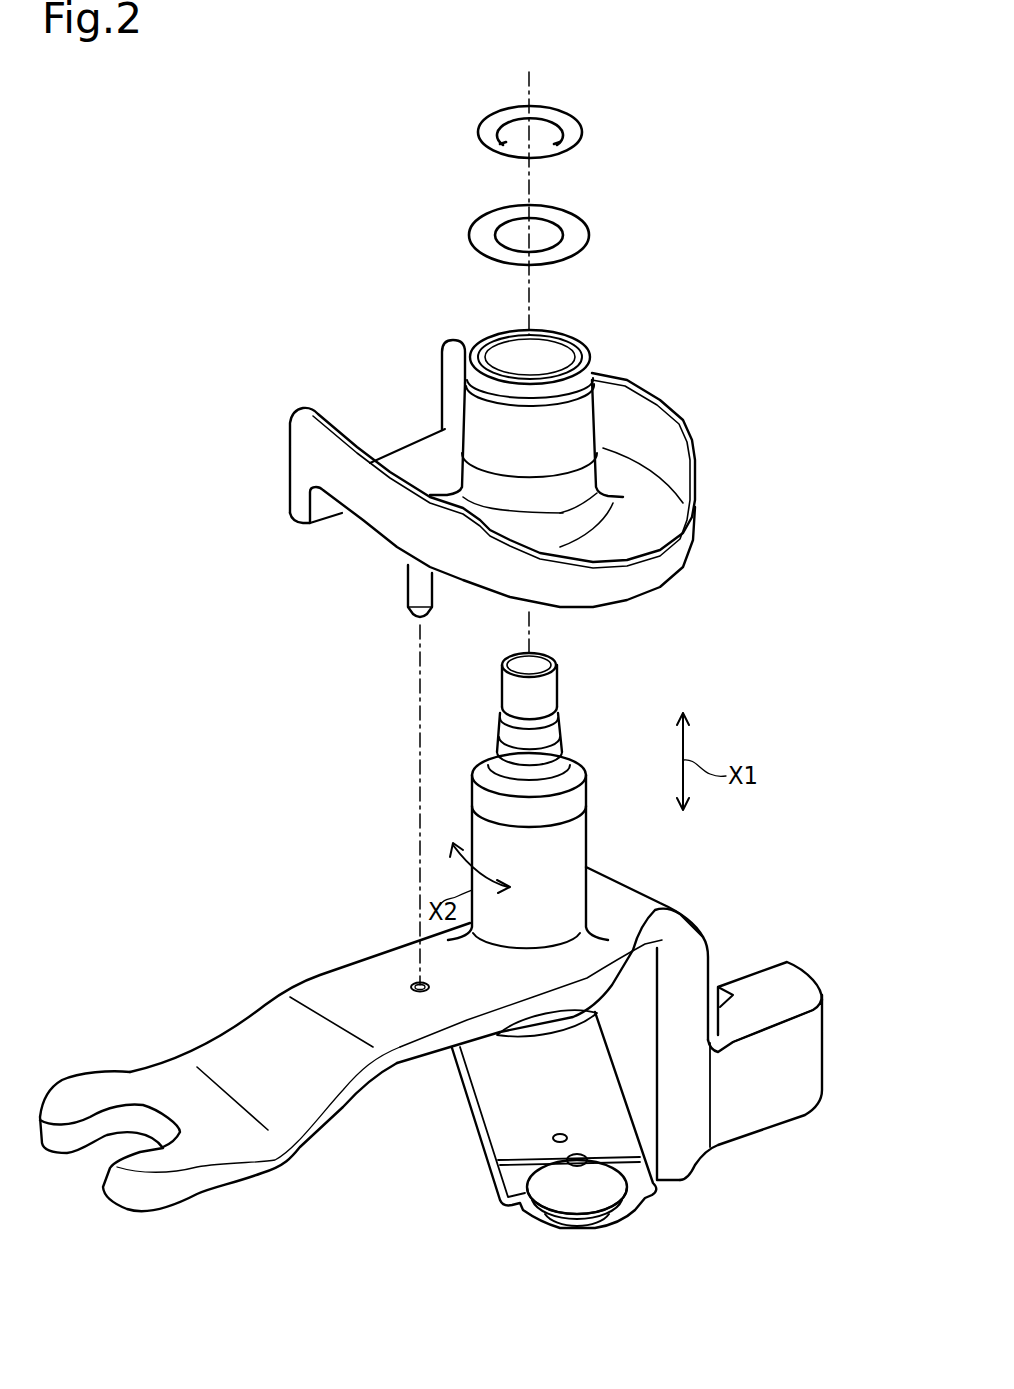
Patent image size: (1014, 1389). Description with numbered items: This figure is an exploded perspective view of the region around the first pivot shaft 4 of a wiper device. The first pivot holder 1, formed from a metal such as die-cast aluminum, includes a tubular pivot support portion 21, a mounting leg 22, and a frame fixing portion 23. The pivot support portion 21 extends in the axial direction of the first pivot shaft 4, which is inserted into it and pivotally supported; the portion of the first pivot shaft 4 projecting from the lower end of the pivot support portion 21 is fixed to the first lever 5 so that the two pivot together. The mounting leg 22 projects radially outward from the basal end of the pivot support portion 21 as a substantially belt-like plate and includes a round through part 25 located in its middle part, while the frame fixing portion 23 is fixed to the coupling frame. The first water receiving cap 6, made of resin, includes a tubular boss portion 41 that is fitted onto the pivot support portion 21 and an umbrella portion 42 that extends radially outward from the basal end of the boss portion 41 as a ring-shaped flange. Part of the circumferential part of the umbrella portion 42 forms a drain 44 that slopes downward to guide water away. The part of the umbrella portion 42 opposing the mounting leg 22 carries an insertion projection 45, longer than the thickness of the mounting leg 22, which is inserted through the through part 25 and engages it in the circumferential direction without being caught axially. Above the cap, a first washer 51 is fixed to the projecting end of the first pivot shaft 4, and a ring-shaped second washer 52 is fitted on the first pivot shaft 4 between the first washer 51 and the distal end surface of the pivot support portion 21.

The first pivot holder 1 is at (431, 1039).
The first pivot shaft 4 is at (562, 686).
The first lever 5 is at (472, 1125).
The first water receiving cap 6 is at (522, 473).
The pivot support portion 21 is at (578, 838).
The mounting leg 22 is at (240, 1042).
The frame fixing portion 23 is at (765, 1122).
The through part 25 is at (413, 985).
The boss portion 41 is at (578, 433).
The umbrella portion 42 is at (660, 570).
The drain 44 is at (388, 443).
The insertion projection 45 is at (412, 587).
The first washer 51 is at (582, 126).
The second washer 52 is at (590, 226).